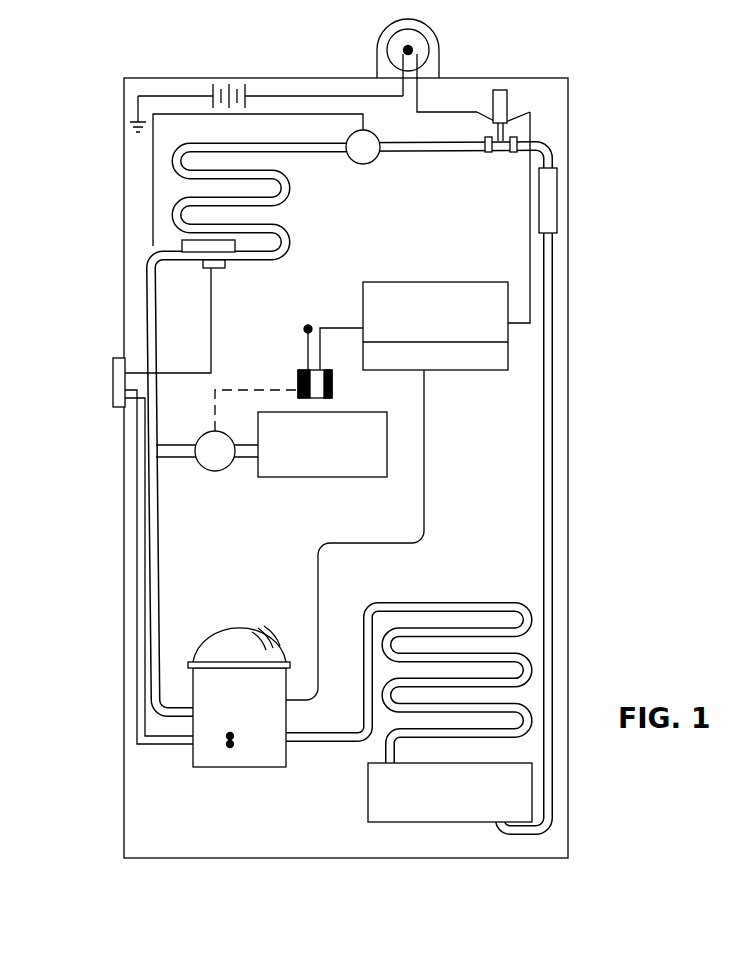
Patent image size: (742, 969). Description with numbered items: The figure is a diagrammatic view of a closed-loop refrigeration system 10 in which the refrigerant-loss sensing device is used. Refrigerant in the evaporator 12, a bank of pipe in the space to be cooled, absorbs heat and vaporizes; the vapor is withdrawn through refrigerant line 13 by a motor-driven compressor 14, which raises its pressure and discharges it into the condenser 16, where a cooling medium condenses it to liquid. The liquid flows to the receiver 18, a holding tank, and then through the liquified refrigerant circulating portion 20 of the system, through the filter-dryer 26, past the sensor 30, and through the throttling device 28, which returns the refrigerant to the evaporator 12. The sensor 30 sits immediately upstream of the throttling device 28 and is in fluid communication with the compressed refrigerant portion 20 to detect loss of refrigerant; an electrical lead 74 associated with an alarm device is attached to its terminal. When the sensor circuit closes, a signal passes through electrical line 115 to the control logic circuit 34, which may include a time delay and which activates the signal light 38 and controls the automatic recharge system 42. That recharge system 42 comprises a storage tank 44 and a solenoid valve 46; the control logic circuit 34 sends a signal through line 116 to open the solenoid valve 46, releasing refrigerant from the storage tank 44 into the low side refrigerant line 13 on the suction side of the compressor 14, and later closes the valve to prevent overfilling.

The refrigeration system 10 is at (114, 493).
The evaporator 12 is at (263, 243).
The refrigerant line 13 is at (147, 273).
The compressor 14 is at (235, 758).
The condenser 16 is at (462, 620).
The receiver 18 is at (368, 792).
The liquified refrigerant circulating portion 20 is at (558, 425).
The filter-dryer 26 is at (539, 205).
The throttling device 28 is at (363, 165).
The sensor 30 is at (507, 100).
The control logic circuit 34 is at (468, 372).
The signal light 38 is at (437, 50).
The automatic recharge system 42 is at (279, 497).
The storage tank 44 is at (350, 478).
The solenoid valve 46 is at (213, 472).
The electrical lead 74 is at (470, 110).
The electrical line 115 is at (530, 278).
The line 116 is at (340, 327).